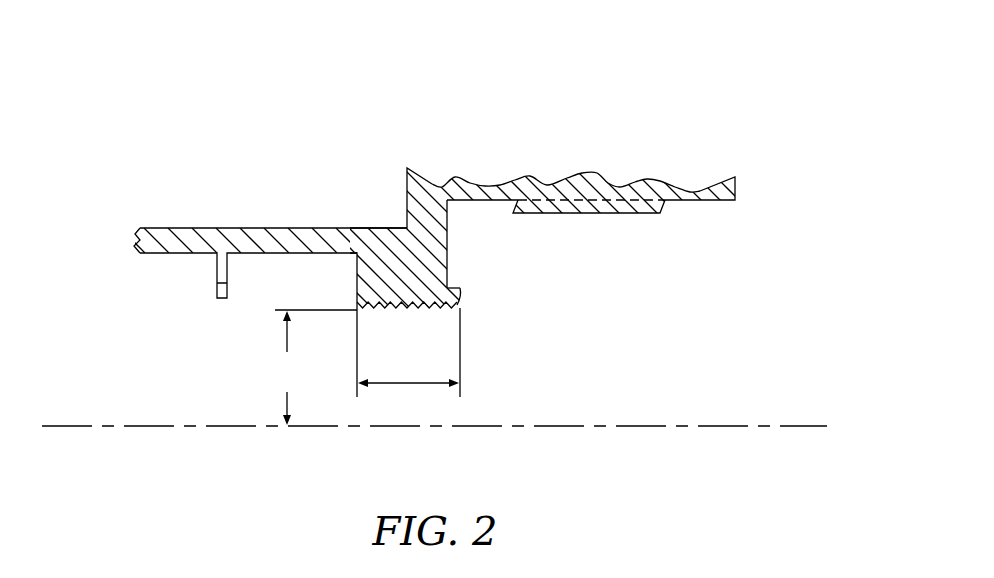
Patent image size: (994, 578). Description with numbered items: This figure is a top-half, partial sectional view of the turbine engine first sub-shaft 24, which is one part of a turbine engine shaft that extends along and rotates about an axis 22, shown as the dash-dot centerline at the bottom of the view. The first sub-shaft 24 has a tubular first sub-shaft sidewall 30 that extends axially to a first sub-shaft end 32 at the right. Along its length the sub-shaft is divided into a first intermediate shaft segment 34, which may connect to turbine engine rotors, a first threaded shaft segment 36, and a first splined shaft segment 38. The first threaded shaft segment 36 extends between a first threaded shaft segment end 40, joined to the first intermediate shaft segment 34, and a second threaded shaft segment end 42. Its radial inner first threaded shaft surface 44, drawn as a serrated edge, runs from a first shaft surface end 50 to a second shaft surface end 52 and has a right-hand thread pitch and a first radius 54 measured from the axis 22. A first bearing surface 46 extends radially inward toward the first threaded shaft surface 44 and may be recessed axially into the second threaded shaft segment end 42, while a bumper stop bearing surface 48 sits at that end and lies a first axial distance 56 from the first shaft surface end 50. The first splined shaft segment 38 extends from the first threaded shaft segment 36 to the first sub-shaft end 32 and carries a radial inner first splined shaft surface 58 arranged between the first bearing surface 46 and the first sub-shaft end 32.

The axis 22 is at (63, 428).
The turbine engine first sub-shaft 24 is at (731, 129).
The first sub-shaft sidewall 30 is at (162, 228).
The first sub-shaft end 32 is at (737, 189).
The first intermediate shaft segment 34 is at (253, 224).
The first threaded shaft segment 36 is at (390, 222).
The first splined shaft segment 38 is at (577, 166).
The first threaded shaft segment end 40 is at (357, 270).
The second threaded shaft segment end 42 is at (461, 290).
The first threaded shaft surface 44 is at (390, 305).
The first bearing surface 46 is at (447, 245).
The bumper stop bearing surface 48 is at (463, 296).
The first shaft surface end 50 is at (357, 302).
The second shaft surface end 52 is at (468, 307).
The first radius 54 is at (315, 363).
The first axial distance 56 is at (395, 385).
The first splined shaft surface 58 is at (600, 213).